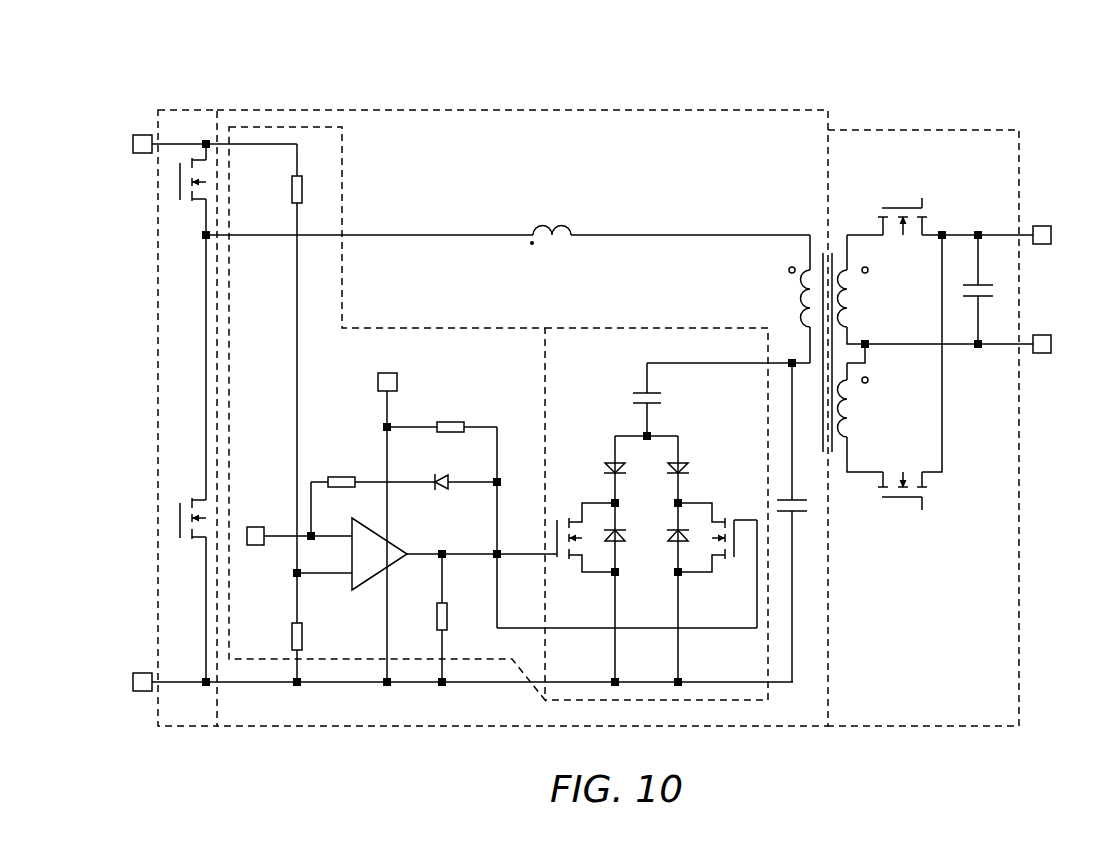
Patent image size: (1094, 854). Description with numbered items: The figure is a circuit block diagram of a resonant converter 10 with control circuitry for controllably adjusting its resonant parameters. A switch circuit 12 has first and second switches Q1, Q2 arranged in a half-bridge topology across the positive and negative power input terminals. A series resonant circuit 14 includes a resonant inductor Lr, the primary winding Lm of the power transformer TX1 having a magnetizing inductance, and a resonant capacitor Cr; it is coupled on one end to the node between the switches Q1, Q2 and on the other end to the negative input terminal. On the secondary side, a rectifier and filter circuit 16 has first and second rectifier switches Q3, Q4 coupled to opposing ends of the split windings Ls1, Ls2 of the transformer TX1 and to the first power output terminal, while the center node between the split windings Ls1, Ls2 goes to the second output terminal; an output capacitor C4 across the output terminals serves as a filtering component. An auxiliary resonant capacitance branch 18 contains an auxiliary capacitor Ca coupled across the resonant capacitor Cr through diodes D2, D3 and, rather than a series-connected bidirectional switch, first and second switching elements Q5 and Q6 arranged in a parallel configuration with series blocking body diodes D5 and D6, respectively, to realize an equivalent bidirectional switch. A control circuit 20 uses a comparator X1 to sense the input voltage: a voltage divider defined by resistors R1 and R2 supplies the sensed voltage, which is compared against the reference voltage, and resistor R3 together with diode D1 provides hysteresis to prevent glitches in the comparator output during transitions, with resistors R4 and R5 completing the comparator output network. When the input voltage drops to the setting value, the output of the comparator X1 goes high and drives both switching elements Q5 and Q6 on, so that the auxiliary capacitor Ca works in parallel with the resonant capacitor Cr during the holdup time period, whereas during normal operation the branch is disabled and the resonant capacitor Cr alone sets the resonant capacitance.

The resonant converter 10 is at (1040, 92).
The switch circuit 12 is at (190, 110).
The series resonant circuit 14 is at (418, 110).
The rectifier and filter circuit 16 is at (930, 130).
The auxiliary resonant capacitance branch 18 is at (750, 726).
The control circuit 20 is at (360, 659).
The first switch Q1 is at (189, 189).
The second switch Q2 is at (189, 458).
The first rectifier switch Q3 is at (940, 216).
The second rectifier switch Q4 is at (896, 372).
The first switching element Q5 is at (583, 544).
The second switching element Q6 is at (709, 544).
The resistor R1 is at (309, 358).
The resistor R2 is at (309, 629).
The resistor R3 is at (373, 471).
The resistor R4 is at (455, 620).
The resistor R5 is at (442, 417).
The diode D1 is at (463, 472).
The diode D2 is at (601, 469).
The diode D3 is at (691, 469).
The blocking body diode D5 is at (607, 592).
The blocking body diode D6 is at (686, 592).
The comparator X1 is at (378, 567).
The resonant inductor Lr is at (550, 247).
The primary winding Lm is at (789, 299).
The split winding Ls1 is at (861, 299).
The split winding Ls2 is at (861, 417).
The power transformer TX1 is at (807, 333).
The auxiliary capacitor Ca is at (633, 399).
The resonant capacitor Cr is at (797, 520).
The output capacitor C4 is at (989, 289).